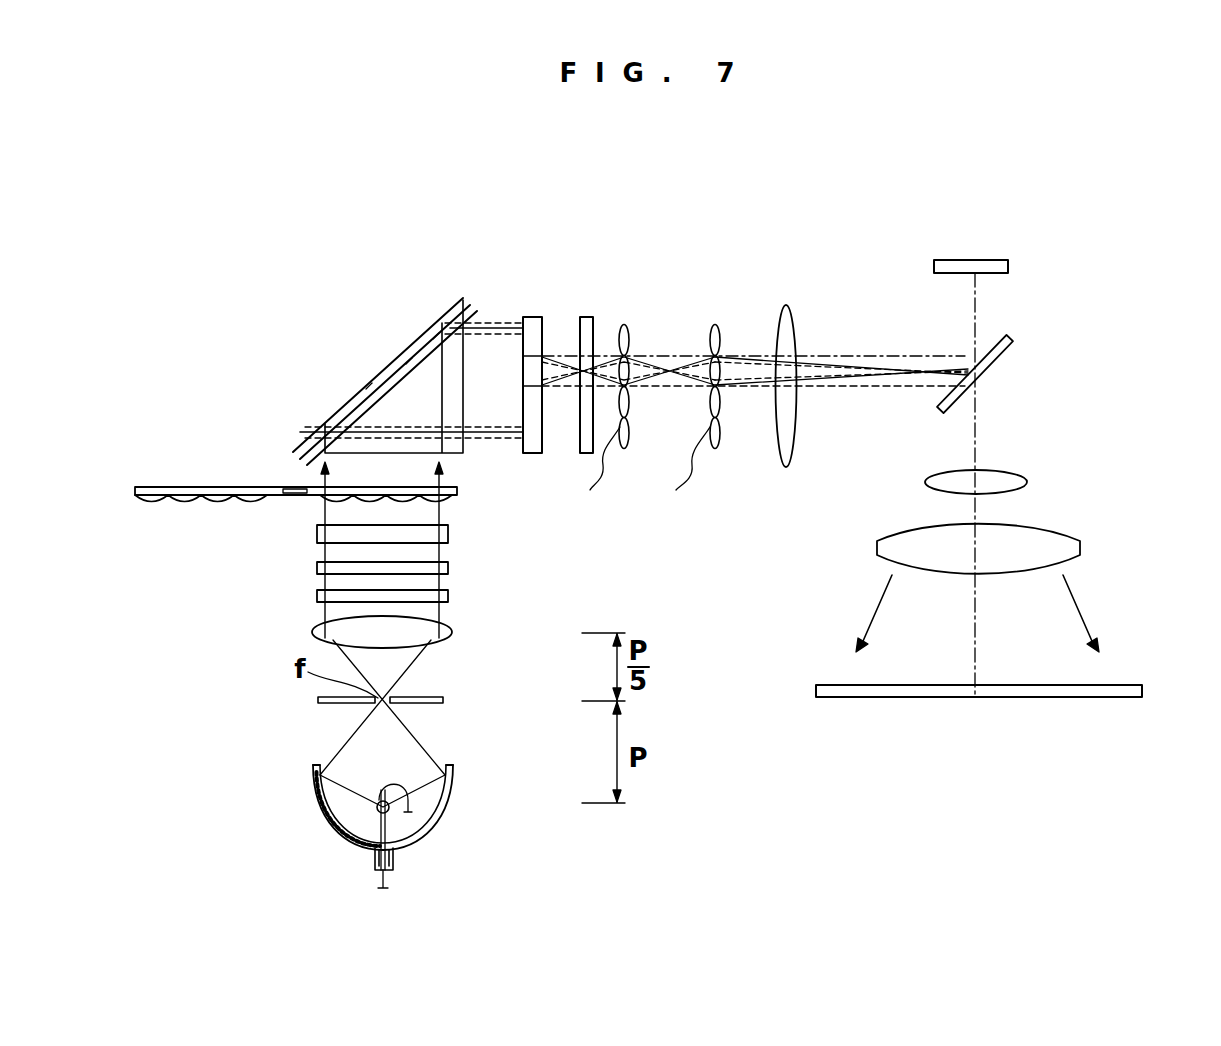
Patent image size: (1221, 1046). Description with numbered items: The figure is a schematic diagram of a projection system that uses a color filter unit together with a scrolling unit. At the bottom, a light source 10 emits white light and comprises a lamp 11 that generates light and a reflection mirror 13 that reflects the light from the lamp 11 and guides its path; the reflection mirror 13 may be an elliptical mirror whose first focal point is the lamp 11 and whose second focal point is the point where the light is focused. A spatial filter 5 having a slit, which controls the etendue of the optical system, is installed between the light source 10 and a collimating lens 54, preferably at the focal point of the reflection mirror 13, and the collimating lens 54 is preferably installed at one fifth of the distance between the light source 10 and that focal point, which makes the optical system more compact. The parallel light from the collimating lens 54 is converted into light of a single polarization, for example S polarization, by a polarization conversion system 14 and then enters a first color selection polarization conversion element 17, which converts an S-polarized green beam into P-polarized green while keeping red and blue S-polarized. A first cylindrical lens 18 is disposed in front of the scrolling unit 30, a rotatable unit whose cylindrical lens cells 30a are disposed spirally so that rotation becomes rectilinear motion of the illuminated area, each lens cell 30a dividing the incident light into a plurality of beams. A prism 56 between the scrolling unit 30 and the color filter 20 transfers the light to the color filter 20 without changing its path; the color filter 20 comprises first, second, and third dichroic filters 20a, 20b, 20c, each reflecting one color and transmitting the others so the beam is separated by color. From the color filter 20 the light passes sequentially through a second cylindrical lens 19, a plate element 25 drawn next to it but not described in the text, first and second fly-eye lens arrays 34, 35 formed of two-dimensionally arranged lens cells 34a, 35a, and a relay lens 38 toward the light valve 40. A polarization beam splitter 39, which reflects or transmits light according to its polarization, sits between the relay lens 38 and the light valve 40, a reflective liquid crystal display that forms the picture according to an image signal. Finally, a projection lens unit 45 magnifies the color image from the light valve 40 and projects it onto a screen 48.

The spatial filter 5 is at (443, 700).
The light source 10 is at (419, 826).
The lamp 11 is at (346, 820).
The reflection mirror 13 is at (420, 836).
The polarization conversion system 14 is at (448, 596).
The first color selection polarization conversion element 17 is at (448, 567).
The first cylindrical lens 18 is at (448, 534).
The second cylindrical lens 19 is at (532, 317).
The color filter 20 is at (374, 331).
The first dichroic filter 20a is at (392, 357).
The second dichroic filter 20b is at (409, 361).
The third dichroic filter 20c is at (369, 386).
The polarization conversion plate 25 is at (587, 317).
The scrolling unit 30 is at (334, 530).
The lens cell 30a is at (252, 505).
The first fly-eye lens array 34 is at (624, 325).
The lens cells 34a is at (590, 471).
The second fly-eye lens array 35 is at (715, 325).
The lens cells 35a is at (677, 471).
The relay lens 38 is at (786, 305).
The polarization beam splitter 39 is at (1011, 338).
The light valve 40 is at (968, 260).
The projection lens unit 45 is at (1088, 480).
The screen 48 is at (1142, 690).
The collimating lens 54 is at (453, 632).
The prism 56 is at (465, 342).